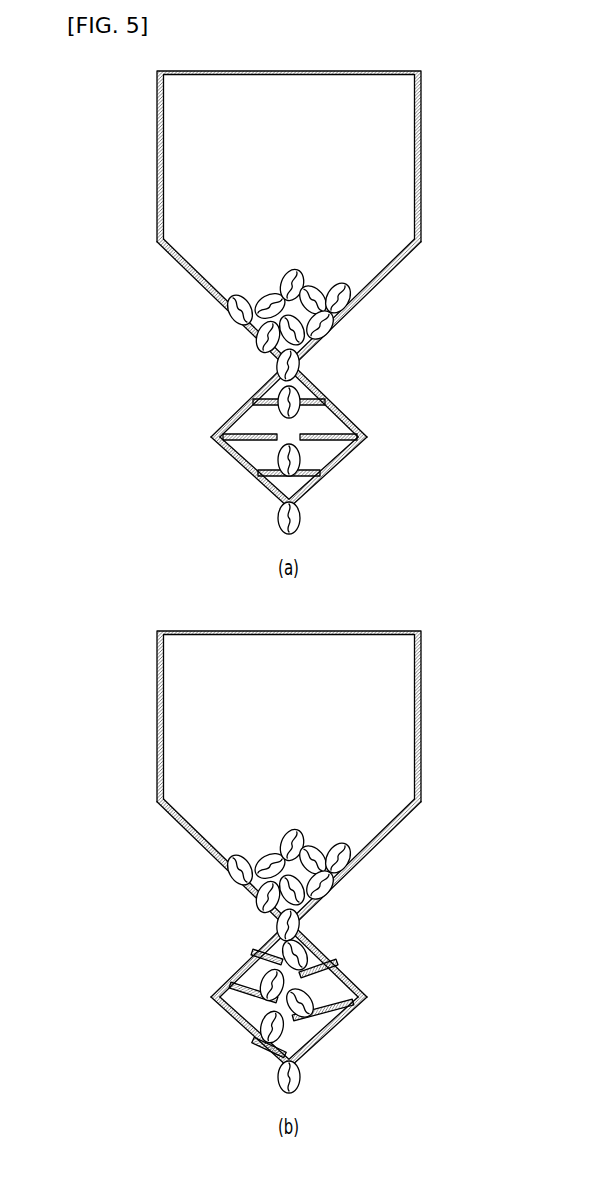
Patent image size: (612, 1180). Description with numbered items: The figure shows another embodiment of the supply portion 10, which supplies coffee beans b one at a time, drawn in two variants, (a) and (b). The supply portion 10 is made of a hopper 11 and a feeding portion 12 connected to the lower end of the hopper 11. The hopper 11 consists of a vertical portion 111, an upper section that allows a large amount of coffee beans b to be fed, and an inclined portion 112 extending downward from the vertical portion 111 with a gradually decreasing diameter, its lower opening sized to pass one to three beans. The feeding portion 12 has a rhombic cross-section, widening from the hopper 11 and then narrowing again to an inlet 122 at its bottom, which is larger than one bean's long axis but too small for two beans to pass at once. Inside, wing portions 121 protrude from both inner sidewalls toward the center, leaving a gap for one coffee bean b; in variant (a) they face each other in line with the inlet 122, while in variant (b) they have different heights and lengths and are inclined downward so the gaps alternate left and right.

The supply portion 10 is at (126, 101).
The hopper 11 is at (515, 217).
The vertical portion 111 is at (423, 203).
The inclined portion 112 is at (383, 287).
The feeding portion 12 is at (347, 410).
The wing portion 121 is at (345, 451).
The inlet 122 is at (303, 508).
The coffee bean b is at (273, 513).